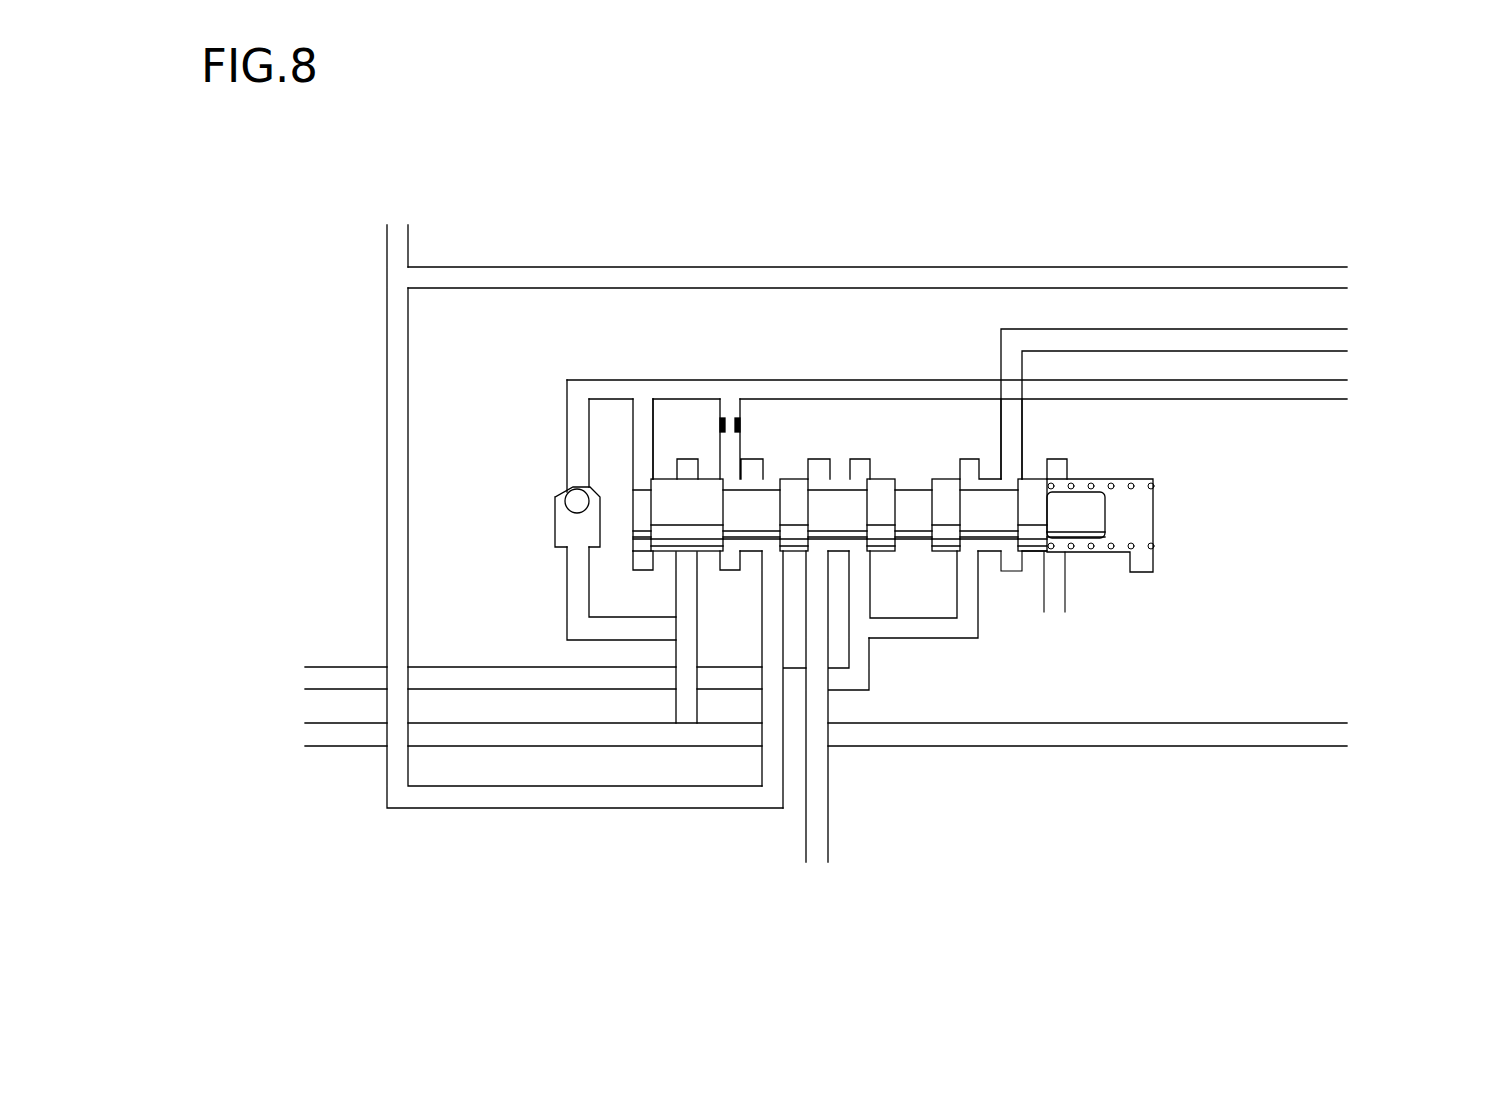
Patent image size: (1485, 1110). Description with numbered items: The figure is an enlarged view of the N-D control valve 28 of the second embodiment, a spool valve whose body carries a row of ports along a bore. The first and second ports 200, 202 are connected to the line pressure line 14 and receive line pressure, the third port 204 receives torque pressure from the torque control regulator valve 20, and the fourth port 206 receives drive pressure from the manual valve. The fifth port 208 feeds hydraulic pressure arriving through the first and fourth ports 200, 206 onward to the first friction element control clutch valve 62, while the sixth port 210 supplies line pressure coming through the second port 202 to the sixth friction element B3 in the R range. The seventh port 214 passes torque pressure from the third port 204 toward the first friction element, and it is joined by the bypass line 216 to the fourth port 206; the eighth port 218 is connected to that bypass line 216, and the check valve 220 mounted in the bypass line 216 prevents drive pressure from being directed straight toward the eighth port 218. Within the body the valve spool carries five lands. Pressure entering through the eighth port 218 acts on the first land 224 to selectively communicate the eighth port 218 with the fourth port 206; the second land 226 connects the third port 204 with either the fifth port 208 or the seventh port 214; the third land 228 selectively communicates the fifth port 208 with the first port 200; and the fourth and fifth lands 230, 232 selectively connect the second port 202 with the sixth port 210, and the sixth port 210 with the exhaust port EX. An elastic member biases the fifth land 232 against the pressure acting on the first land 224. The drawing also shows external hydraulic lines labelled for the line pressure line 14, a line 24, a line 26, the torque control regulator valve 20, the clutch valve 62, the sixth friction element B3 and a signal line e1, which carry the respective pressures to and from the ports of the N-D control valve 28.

The line pressure line 14 is at (518, 678).
The torque control regulator valve 20 is at (1366, 279).
The oil passage 24 is at (1016, 733).
The oil passage 26 is at (397, 232).
The N-D control valve 28 is at (1168, 519).
The first friction element control clutch valve 62 is at (816, 865).
The first port 200 is at (860, 558).
The second port 202 is at (966, 565).
The third port 204 is at (776, 560).
The fourth port 206 is at (686, 560).
The fifth port 208 is at (817, 560).
The sixth port 210 is at (1008, 468).
The seventh port 214 is at (728, 468).
The bypass line 216 is at (565, 570).
The eighth port 218 is at (642, 478).
The check valve 220 is at (555, 506).
The first land 224 is at (667, 483).
The second land 226 is at (794, 483).
The third land 228 is at (880, 483).
The fourth land 230 is at (942, 485).
The fifth land 232 is at (1032, 483).
The sixth friction element B3 is at (1360, 341).
The signal pressure line e1 is at (1360, 390).
The exhaust port EX is at (1034, 600).